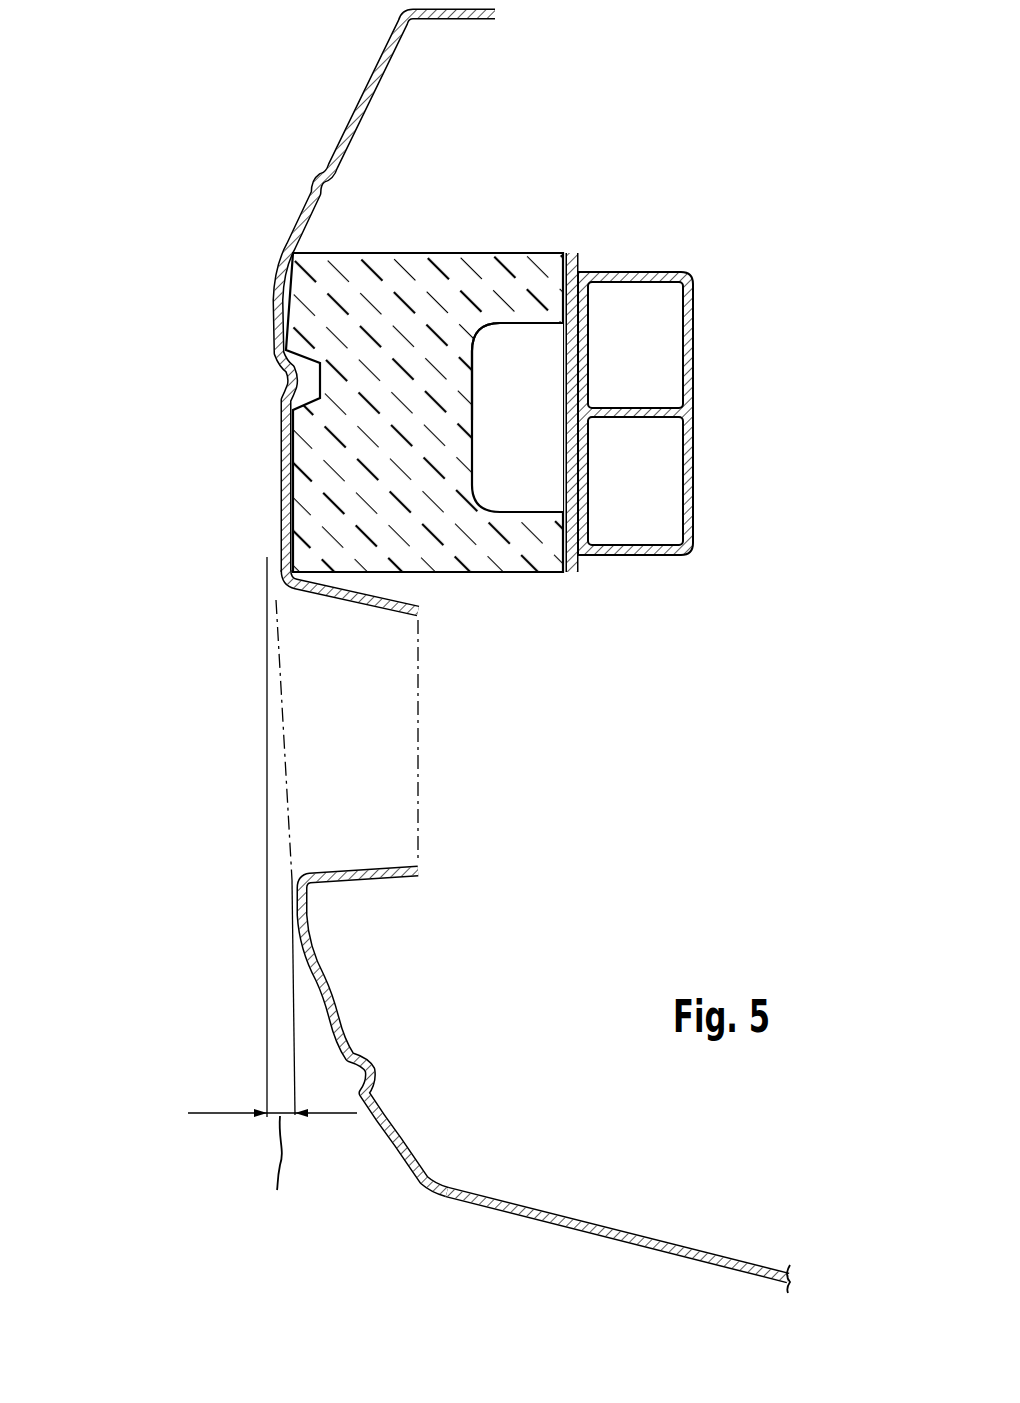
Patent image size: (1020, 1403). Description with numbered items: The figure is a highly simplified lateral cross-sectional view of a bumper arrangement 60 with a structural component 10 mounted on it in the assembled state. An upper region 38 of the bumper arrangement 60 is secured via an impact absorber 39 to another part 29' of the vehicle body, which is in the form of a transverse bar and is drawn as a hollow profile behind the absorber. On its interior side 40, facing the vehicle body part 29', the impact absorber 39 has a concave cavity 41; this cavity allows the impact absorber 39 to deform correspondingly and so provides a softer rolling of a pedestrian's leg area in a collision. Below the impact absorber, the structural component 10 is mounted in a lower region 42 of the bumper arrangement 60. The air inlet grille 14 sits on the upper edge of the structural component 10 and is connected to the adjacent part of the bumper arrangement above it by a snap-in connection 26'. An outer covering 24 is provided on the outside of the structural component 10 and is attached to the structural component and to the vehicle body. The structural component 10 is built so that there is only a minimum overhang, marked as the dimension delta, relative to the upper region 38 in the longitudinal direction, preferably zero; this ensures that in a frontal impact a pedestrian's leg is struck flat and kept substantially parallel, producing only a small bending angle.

The structural component 10 is at (334, 1007).
The air inlet grille 14 is at (418, 793).
The outer covering 24 is at (530, 1215).
The snap-in connection 26' is at (397, 646).
The vehicle body part 29' is at (689, 412).
The upper region 38 is at (192, 182).
The impact absorber 39 is at (380, 282).
The interior side 40 is at (560, 524).
The concave cavity 41 is at (526, 326).
The lower region 42 is at (190, 1048).
The bumper arrangement 60 is at (196, 548).